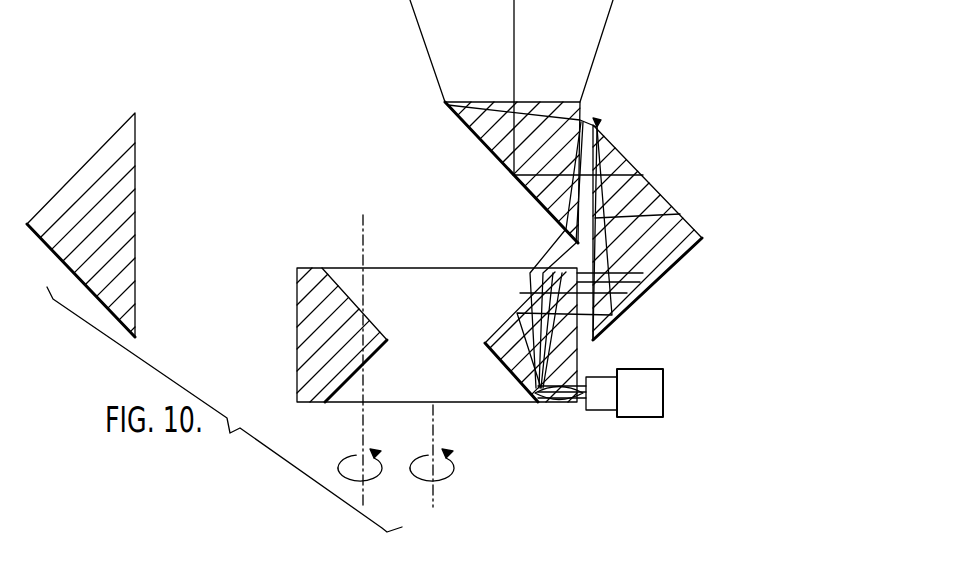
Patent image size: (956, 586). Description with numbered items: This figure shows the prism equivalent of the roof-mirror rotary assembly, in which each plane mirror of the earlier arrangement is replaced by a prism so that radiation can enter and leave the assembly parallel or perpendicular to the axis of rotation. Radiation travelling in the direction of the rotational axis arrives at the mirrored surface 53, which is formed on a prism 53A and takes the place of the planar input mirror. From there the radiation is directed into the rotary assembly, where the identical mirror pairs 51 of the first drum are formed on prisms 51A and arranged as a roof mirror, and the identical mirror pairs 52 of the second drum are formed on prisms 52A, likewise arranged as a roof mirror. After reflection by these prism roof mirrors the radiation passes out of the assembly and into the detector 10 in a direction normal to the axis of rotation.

The prisms 51A is at (105, 228).
The mirror pairs 51 is at (704, 168).
The mirror pairs 52 is at (523, 312).
The prisms 52A is at (562, 355).
The mirrored surface 53 is at (482, 145).
The prism 53A is at (541, 112).
The detector 10 is at (624, 393).